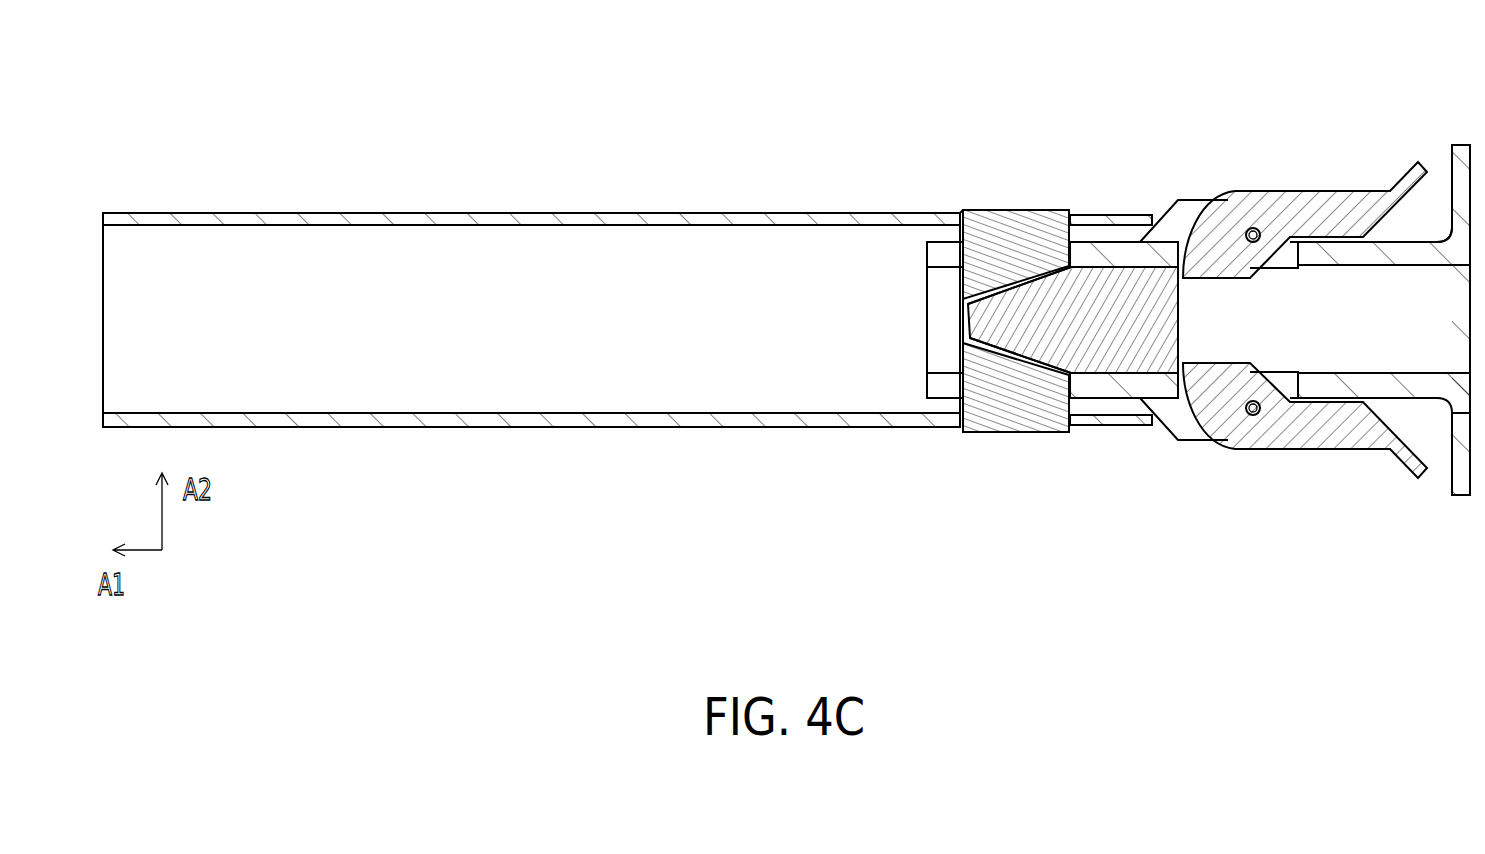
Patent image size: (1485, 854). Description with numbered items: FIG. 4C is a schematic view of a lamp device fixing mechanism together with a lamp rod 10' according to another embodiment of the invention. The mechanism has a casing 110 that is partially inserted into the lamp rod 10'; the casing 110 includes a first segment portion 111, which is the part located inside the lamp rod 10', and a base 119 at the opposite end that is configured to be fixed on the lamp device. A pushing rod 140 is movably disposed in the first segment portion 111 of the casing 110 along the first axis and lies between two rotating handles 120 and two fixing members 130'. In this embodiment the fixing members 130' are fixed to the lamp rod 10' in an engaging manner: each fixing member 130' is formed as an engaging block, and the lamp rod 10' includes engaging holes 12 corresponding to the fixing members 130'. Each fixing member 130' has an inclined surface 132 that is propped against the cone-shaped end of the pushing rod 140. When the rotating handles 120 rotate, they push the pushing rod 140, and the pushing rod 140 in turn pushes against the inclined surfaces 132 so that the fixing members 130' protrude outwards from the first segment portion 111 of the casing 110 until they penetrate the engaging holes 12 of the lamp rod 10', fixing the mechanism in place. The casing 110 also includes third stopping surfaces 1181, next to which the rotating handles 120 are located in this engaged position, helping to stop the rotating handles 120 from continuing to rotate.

The lamp rod 10' is at (531, 279).
The engaging hole 12 is at (962, 208).
The casing 110 is at (1198, 320).
The first segment portion 111 is at (1110, 262).
The base 119 is at (1458, 478).
The third stopping surface 1181 is at (1424, 242).
The rotating handle 120 is at (1297, 217).
The fixing member 130' is at (960, 321).
The inclined surface 132 is at (1006, 293).
The pushing rod 140 is at (1082, 325).